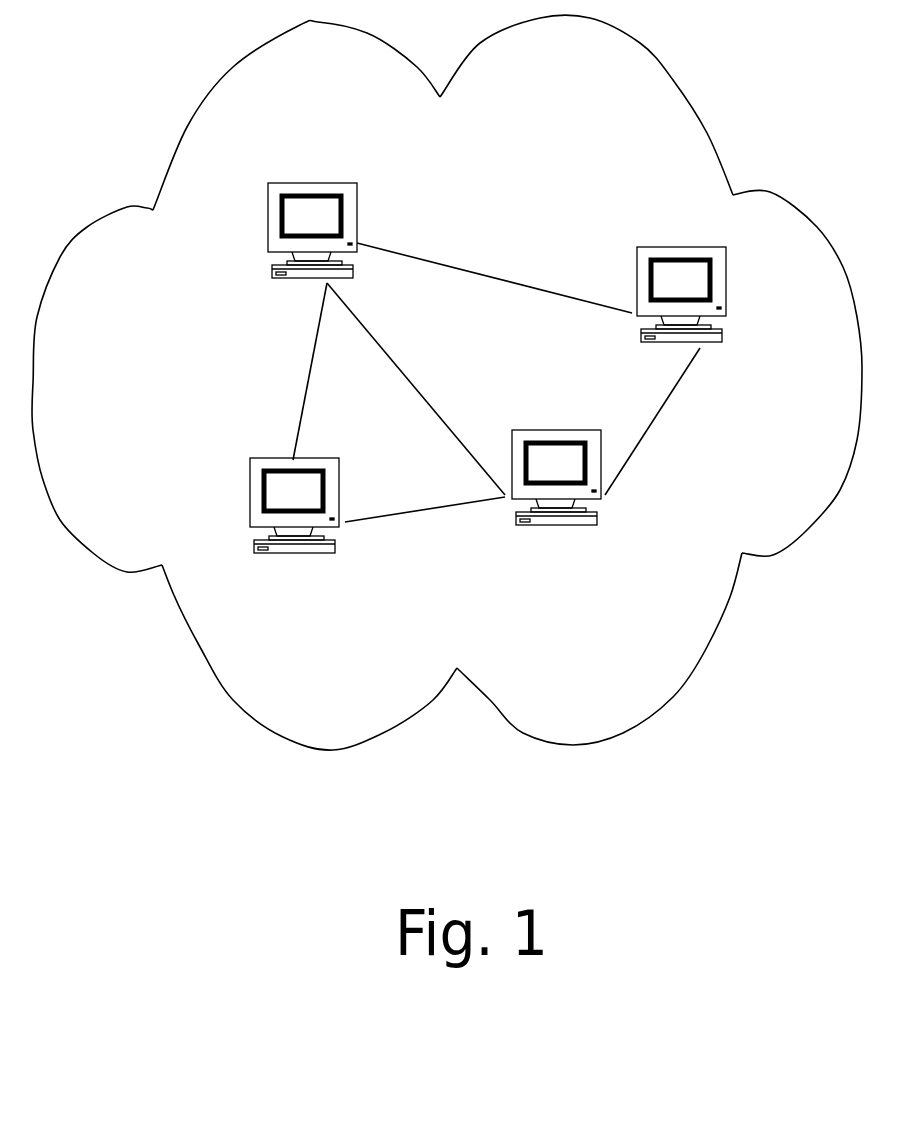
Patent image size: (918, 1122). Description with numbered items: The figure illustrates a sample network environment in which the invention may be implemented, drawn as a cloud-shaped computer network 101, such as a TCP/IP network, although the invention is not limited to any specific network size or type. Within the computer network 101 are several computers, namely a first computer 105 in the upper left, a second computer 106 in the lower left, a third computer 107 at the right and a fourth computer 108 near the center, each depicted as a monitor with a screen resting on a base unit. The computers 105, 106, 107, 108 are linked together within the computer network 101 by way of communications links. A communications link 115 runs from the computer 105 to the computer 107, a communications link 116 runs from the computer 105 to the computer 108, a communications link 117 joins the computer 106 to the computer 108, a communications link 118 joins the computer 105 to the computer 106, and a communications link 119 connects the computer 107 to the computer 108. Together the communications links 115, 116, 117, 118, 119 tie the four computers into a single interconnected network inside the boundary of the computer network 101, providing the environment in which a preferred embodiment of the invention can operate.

The computer network 101 is at (186, 141).
The computer 105 is at (312, 214).
The computer 106 is at (259, 505).
The computer 107 is at (681, 275).
The computer 108 is at (556, 460).
The communications link 115 is at (494, 278).
The communications link 116 is at (416, 389).
The communications link 117 is at (425, 500).
The communications link 118 is at (288, 371).
The communications link 119 is at (656, 421).